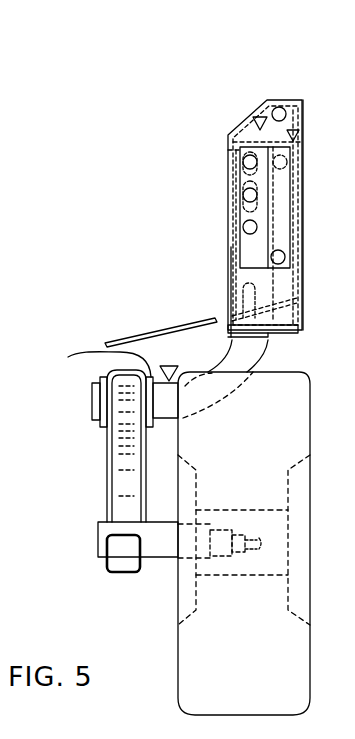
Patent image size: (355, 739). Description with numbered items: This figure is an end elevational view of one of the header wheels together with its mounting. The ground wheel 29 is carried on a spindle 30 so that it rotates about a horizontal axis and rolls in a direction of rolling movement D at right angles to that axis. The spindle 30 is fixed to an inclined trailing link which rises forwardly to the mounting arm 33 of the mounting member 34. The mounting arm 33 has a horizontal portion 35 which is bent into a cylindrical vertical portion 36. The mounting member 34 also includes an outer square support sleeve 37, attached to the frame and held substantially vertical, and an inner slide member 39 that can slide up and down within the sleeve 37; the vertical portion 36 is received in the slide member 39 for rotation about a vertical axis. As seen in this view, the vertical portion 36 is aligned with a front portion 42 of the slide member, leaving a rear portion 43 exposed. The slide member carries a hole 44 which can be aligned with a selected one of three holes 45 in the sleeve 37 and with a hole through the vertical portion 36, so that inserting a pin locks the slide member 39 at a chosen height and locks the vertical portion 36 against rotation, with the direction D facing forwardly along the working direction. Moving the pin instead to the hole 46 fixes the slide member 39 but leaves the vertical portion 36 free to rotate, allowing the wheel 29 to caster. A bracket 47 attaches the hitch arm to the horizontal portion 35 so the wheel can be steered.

The ground wheel 29 is at (298, 395).
The spindle 30 is at (222, 530).
The mounting arm 33 is at (168, 366).
The mounting member 34 is at (244, 202).
The horizontal portion 35 is at (93, 390).
The vertical portion 36 is at (243, 275).
The outer square support sleeve 37 is at (303, 229).
The inner slide member 39 is at (228, 171).
The front portion 42 is at (258, 116).
The rear portion 43 is at (293, 130).
The hole 44 is at (258, 183).
The holes 45 is at (230, 158).
The hole 46 is at (285, 258).
The bracket 47 is at (100, 370).
The direction of rolling movement D is at (242, 715).